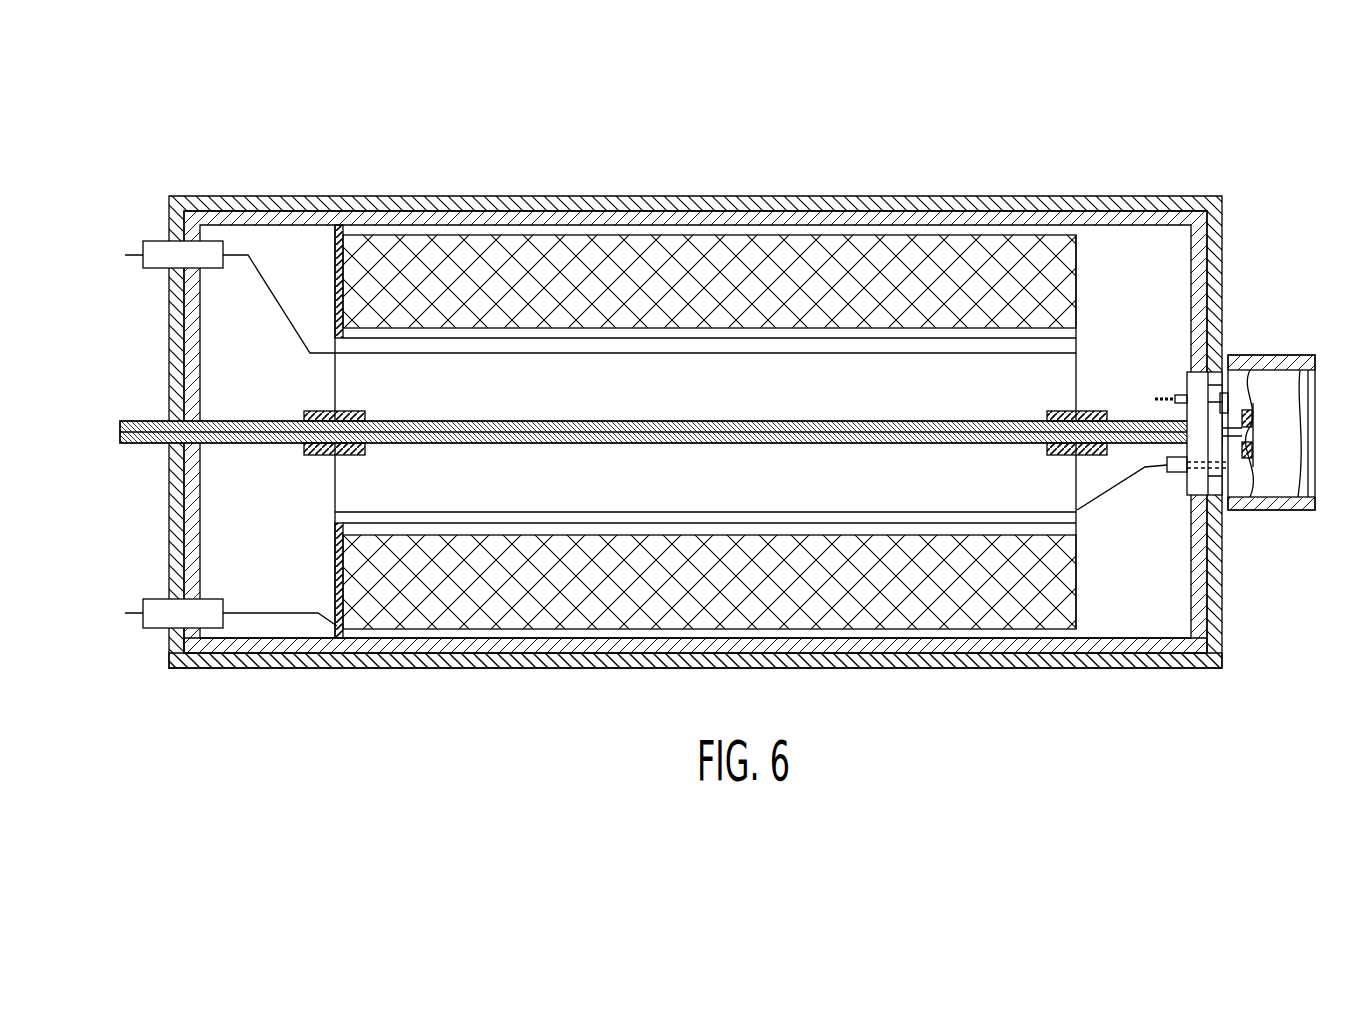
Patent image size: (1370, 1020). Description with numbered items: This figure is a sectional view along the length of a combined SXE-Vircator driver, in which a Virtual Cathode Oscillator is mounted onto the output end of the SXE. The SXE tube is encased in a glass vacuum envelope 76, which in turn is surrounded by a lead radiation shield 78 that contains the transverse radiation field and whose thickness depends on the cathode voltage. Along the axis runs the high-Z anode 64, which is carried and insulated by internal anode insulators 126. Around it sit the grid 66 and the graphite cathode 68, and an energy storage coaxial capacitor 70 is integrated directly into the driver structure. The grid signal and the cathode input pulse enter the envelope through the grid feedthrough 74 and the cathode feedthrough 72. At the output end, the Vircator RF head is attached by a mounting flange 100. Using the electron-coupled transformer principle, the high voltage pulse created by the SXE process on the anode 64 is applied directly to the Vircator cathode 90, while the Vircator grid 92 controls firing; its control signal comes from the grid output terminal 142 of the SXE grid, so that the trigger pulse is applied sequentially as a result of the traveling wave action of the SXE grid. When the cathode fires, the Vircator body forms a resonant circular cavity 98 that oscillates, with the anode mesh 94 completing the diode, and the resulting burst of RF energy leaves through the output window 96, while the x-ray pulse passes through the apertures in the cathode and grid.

The anode 64 is at (130, 421).
The grid 66 is at (582, 352).
The cathode 68 is at (423, 535).
The coaxial capacitor 70 is at (462, 267).
The cathode feedthrough 72 is at (133, 618).
The grid feedthrough 74 is at (130, 253).
The glass vacuum envelope 76 is at (240, 196).
The radiation shield 78 is at (228, 667).
The Vircator cathode 90 is at (1252, 393).
The Vircator grid 92 is at (1253, 453).
The anode mesh 94 is at (1303, 497).
The output window 96 is at (1325, 407).
The resonant circular cavity 98 is at (1282, 383).
The mounting flange 100 is at (1210, 478).
The internal anode insulator 126 is at (307, 455).
The grid output terminal 142 is at (1110, 490).